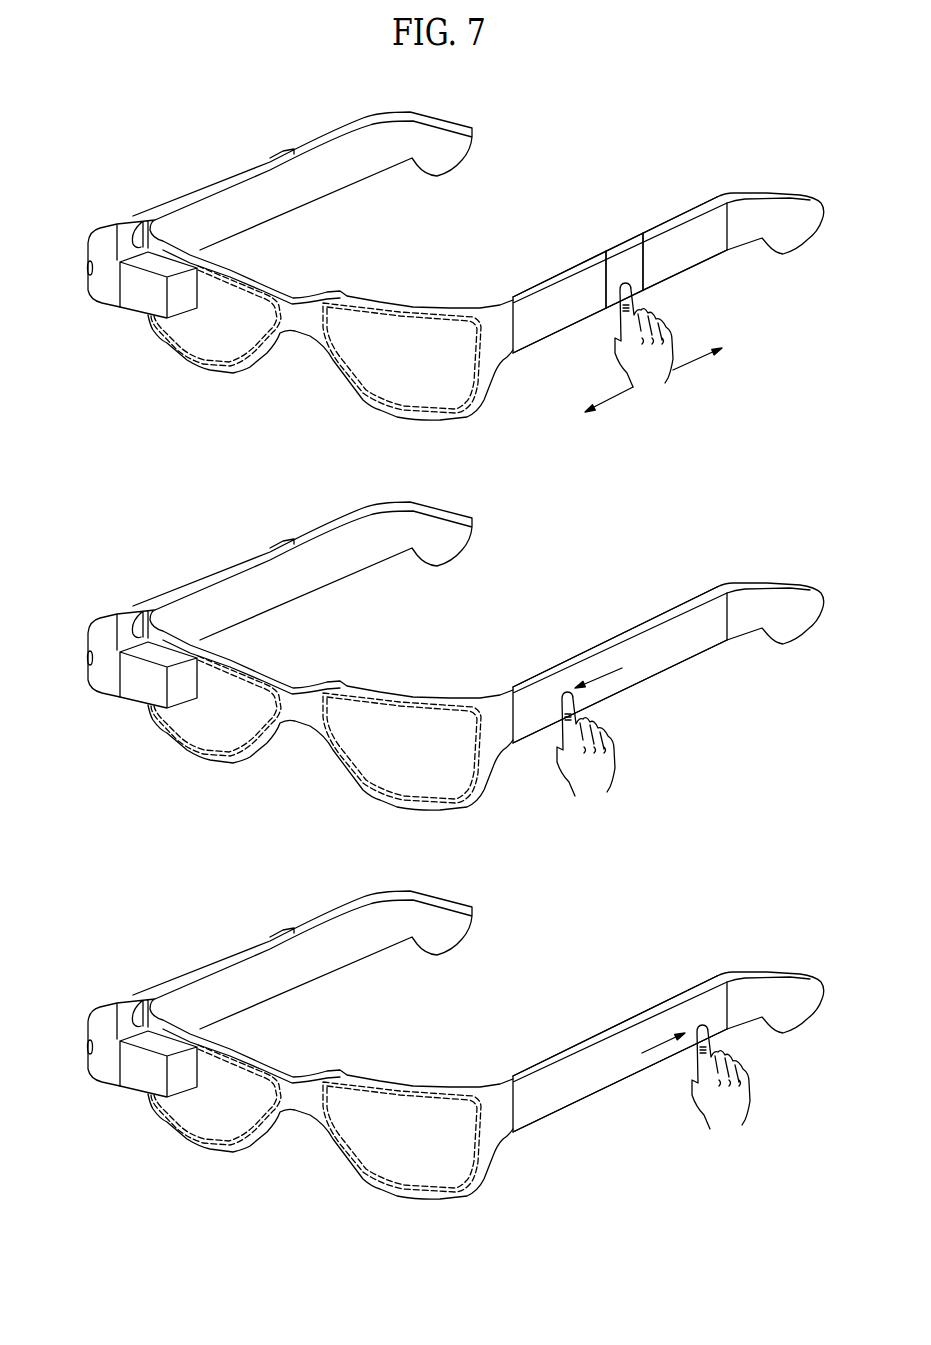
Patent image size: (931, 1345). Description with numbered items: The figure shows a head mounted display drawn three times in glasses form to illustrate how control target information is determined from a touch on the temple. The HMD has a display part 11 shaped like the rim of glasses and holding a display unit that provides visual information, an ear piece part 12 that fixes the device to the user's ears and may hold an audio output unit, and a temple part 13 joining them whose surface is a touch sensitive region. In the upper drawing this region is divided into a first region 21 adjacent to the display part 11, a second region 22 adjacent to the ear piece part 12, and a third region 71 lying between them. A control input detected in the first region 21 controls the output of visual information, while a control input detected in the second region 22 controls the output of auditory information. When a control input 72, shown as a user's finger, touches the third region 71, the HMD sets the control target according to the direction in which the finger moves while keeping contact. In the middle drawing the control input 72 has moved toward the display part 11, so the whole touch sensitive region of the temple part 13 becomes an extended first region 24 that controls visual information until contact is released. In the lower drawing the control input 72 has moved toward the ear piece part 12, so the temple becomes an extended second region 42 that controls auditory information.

The display part 11 is at (143, 300).
The ear piece part 12 is at (783, 250).
The temple part 13 is at (688, 212).
The first region 21 is at (557, 320).
The second region 22 is at (697, 257).
The third region 71 is at (627, 262).
The control input 72 is at (657, 368).
The extended first region 24 is at (698, 650).
The extended second region 42 is at (575, 1094).